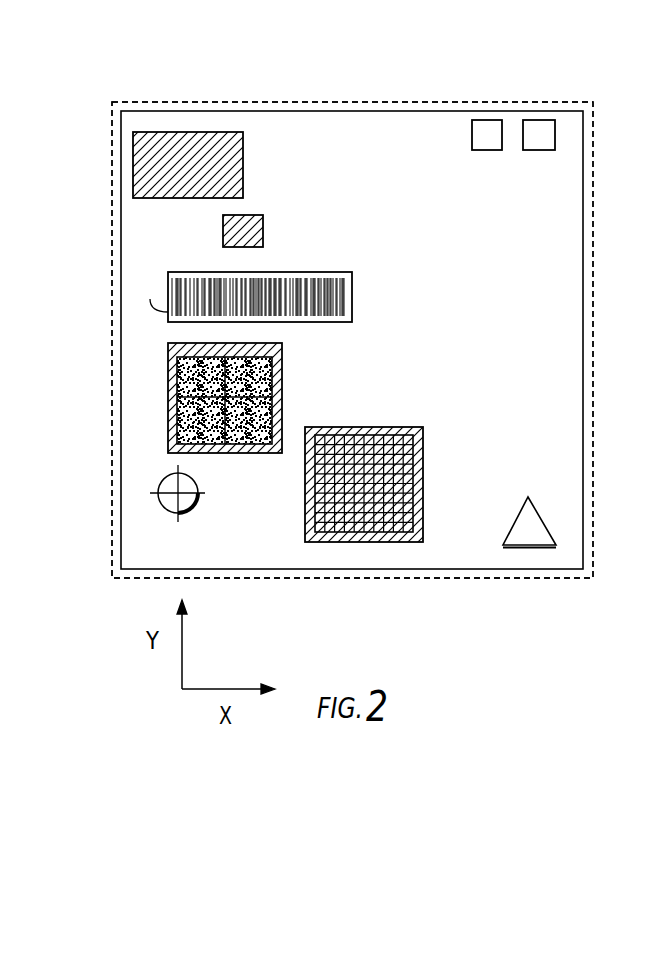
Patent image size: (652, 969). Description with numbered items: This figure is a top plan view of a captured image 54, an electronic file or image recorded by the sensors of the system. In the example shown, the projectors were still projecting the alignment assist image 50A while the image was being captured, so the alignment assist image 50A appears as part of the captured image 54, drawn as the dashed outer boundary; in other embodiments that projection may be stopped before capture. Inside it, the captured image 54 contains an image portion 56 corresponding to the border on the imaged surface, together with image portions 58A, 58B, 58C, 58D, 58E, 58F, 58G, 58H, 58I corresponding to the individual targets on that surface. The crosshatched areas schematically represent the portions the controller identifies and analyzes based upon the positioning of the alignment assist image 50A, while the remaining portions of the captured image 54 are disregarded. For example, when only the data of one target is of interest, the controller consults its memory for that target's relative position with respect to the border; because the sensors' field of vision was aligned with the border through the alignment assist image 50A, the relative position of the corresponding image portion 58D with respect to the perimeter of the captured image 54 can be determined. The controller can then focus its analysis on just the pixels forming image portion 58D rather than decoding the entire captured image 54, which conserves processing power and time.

The captured image 54 is at (470, 83).
The alignment assist image 50A is at (522, 581).
The image portion corresponding to border 56 is at (438, 575).
The image portion 58A is at (203, 140).
The image portion 58B is at (240, 218).
The image portion 58C is at (310, 272).
The image portion 58D is at (263, 377).
The image portion 58E is at (407, 498).
The image portion 58F is at (194, 509).
The image portion 58G is at (517, 520).
The image portion 58H is at (485, 151).
The image portion 58I is at (540, 151).